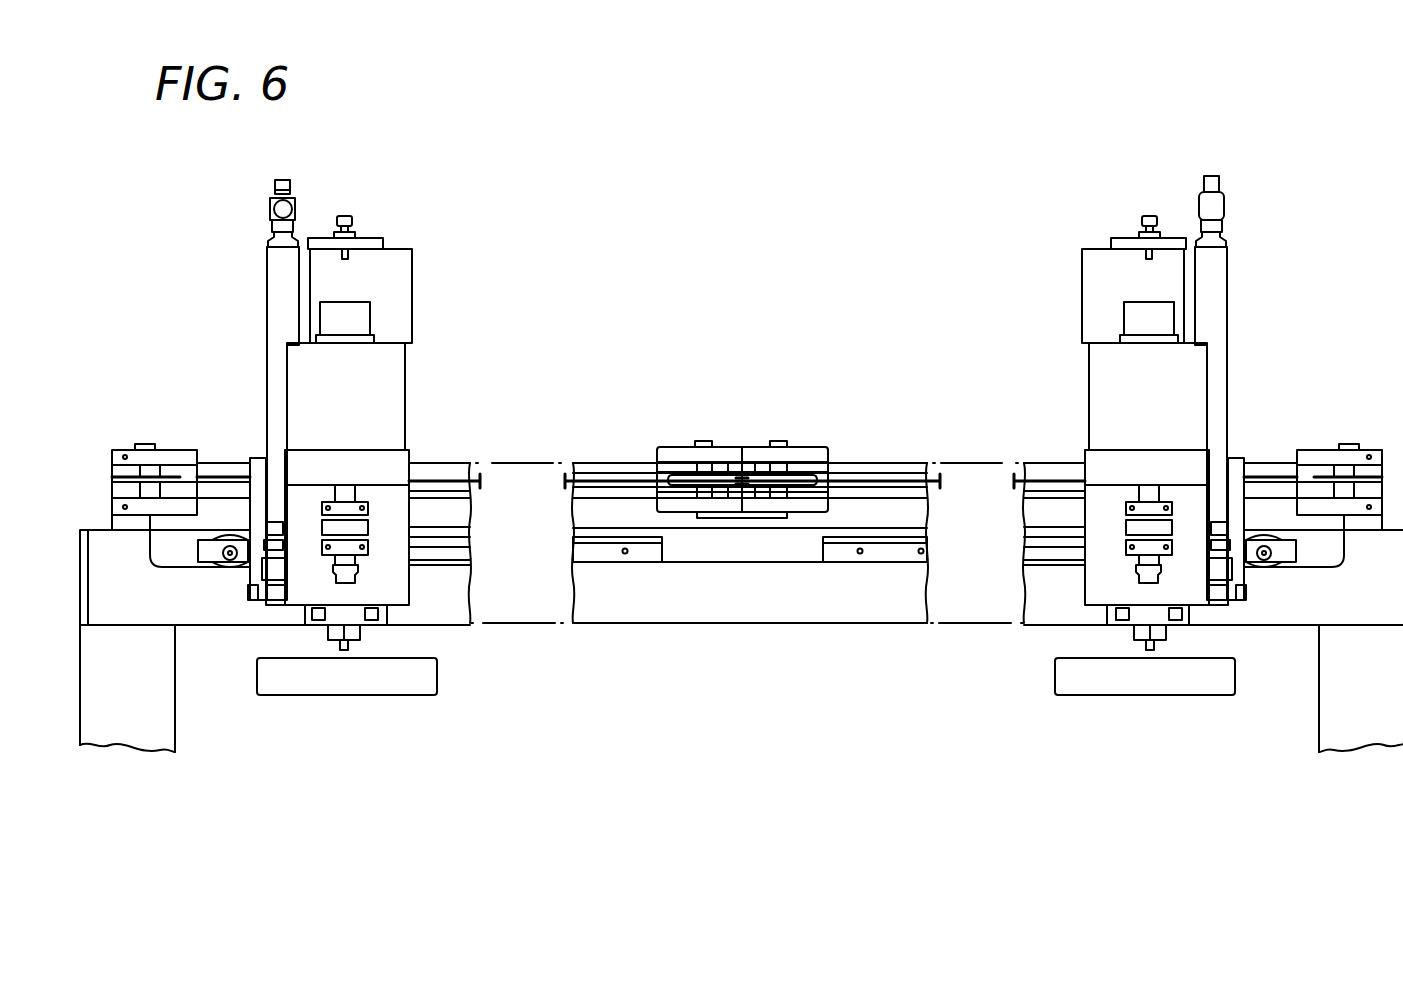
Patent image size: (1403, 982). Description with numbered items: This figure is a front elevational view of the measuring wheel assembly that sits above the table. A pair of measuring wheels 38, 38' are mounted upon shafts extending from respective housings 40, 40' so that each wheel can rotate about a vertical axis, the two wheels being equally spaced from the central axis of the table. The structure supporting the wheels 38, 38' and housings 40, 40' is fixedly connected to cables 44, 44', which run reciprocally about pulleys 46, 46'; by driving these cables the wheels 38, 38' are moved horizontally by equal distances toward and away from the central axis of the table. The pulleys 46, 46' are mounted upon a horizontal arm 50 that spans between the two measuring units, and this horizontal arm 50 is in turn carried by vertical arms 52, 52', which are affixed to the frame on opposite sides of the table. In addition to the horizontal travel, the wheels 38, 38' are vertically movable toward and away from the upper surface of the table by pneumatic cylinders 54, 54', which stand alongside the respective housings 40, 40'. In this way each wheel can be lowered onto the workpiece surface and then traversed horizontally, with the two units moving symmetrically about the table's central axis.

The measuring wheel 38 is at (384, 682).
The measuring wheel 38' is at (1092, 682).
The housing 40 is at (379, 433).
The housing 40' is at (1112, 433).
The cable 44 is at (380, 517).
The cable 44' is at (1114, 508).
The pulley 46 is at (427, 458).
The pulley 46' is at (1059, 458).
The horizontal arm 50 is at (687, 603).
The vertical arm 52 is at (275, 643).
The vertical arm 52' is at (1213, 642).
The pneumatic cylinder 54 is at (252, 392).
The pneumatic cylinder 54' is at (1255, 390).